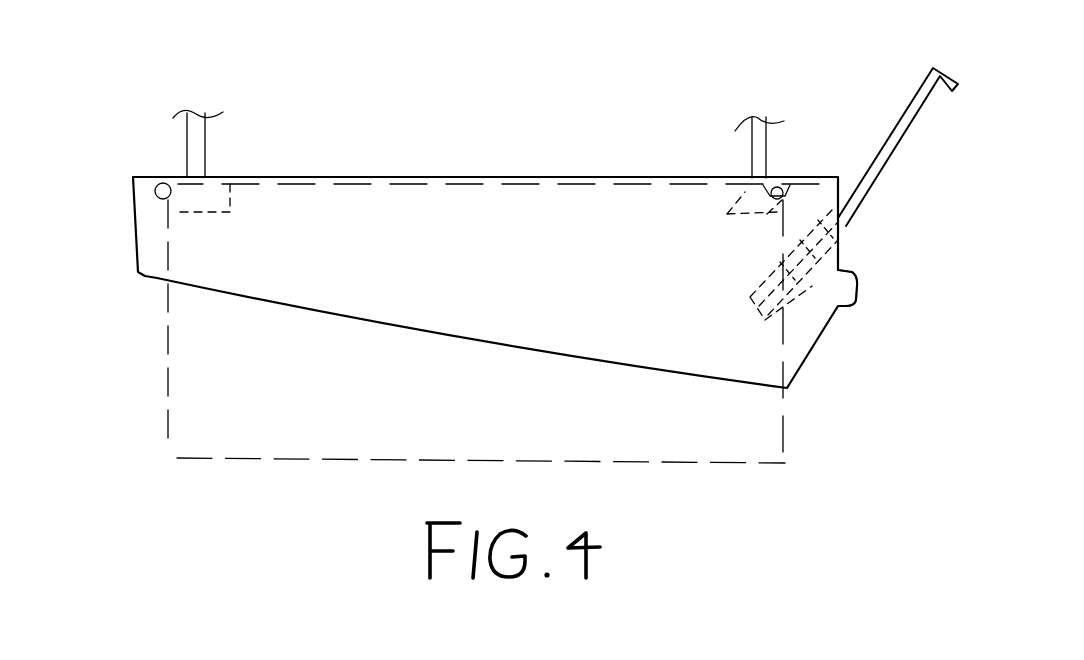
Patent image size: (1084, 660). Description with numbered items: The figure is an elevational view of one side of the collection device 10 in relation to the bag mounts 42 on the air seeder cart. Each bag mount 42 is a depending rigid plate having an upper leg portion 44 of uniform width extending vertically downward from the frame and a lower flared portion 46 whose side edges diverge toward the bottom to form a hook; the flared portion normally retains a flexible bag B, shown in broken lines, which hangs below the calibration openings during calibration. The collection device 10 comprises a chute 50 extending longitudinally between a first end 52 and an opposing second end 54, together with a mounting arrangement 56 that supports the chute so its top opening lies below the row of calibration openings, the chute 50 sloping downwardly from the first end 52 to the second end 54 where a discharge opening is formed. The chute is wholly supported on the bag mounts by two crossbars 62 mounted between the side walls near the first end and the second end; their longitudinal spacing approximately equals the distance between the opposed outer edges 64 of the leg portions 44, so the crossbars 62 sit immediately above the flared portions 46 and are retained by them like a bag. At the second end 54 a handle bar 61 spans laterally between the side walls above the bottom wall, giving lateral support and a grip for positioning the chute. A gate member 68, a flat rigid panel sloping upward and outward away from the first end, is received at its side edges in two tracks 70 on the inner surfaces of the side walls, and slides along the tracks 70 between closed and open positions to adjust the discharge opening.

The collection device 10 is at (657, 92).
The bag mount 42 is at (195, 228).
The upper leg portion 44 is at (197, 153).
The lower flared portion 46 is at (222, 195).
The chute 50 is at (455, 226).
The first end 52 is at (143, 92).
The second end 54 is at (866, 408).
The mounting arrangement 56 is at (806, 184).
The handle bar 61 is at (856, 295).
The crossbar 62 is at (152, 190).
The outer edge 64 is at (185, 137).
The gate member 68 is at (880, 157).
The track 70 is at (805, 288).
The flexible bag B is at (337, 460).